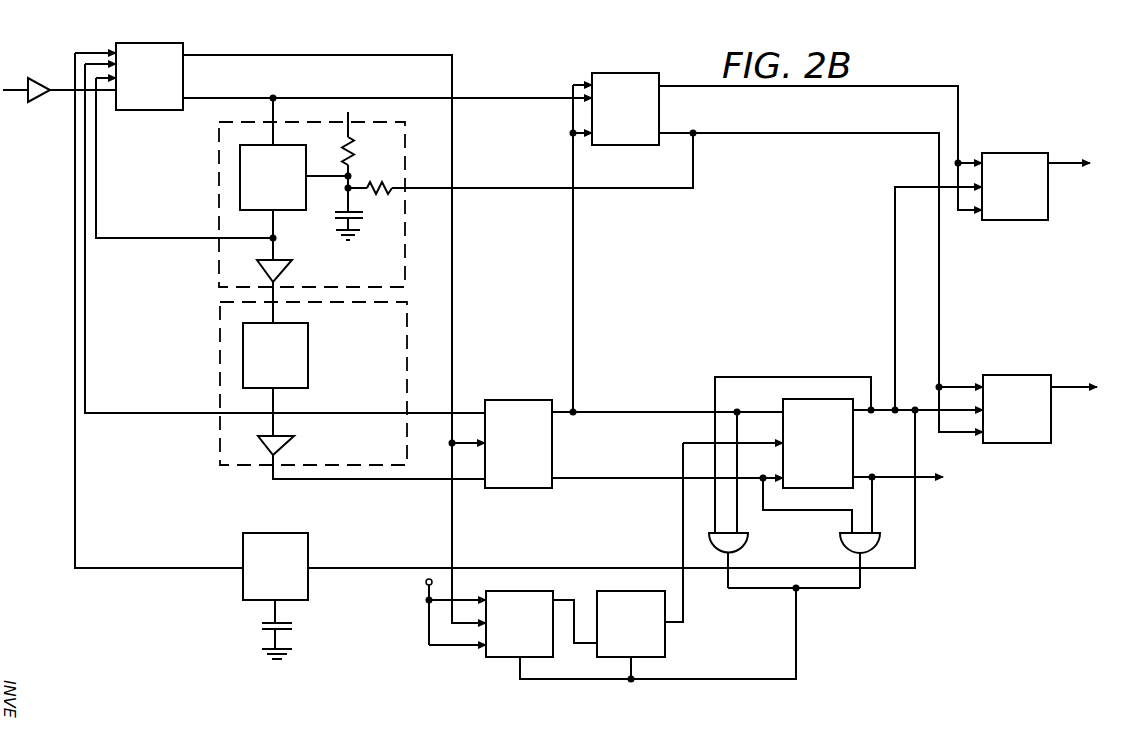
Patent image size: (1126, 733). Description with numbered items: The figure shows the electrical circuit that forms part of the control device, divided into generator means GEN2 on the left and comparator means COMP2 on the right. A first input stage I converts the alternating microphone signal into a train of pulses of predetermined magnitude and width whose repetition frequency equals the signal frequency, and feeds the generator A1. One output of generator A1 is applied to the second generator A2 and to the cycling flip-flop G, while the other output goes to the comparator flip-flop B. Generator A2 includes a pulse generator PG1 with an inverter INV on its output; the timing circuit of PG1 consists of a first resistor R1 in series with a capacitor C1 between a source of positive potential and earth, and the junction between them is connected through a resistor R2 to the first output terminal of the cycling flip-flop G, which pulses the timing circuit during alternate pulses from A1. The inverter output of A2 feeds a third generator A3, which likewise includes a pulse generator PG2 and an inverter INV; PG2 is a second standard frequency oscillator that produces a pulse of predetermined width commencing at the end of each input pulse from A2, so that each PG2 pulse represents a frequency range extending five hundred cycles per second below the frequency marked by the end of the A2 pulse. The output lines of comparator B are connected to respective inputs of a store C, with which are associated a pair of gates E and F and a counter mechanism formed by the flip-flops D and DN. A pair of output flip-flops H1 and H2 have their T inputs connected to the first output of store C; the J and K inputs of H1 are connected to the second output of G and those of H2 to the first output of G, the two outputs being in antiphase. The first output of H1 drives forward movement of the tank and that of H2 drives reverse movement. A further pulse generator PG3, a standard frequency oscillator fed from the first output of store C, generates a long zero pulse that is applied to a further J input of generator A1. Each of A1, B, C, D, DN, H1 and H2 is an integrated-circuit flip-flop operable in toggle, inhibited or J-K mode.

The first input stage I is at (39, 72).
The generator A1 is at (160, 89).
The second generator A2 is at (219, 260).
The third generator A3 is at (220, 434).
The pulse generator PG1 is at (290, 193).
The pulse generator PG2 is at (275, 364).
The further pulse generator PG3 is at (275, 596).
The first resistor R1 is at (362, 135).
The resistor R2 is at (381, 202).
The capacitor C1 is at (334, 226).
The inverter INV is at (290, 359).
The generator means GEN2 is at (422, 286).
The comparator means COMP2 is at (745, 274).
The comparator flip-flop B is at (527, 459).
The store C is at (824, 463).
The counter mechanism D is at (511, 626).
The counter mechanism DN is at (642, 626).
The gate E is at (735, 549).
The gate F is at (867, 549).
The cycling flip-flop G is at (635, 122).
The output flip-flop H1 is at (1030, 200).
The output flip-flop H2 is at (1032, 423).